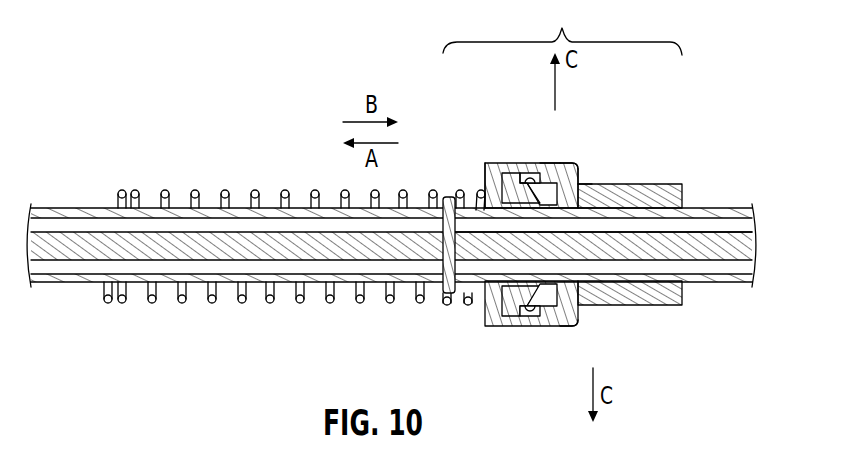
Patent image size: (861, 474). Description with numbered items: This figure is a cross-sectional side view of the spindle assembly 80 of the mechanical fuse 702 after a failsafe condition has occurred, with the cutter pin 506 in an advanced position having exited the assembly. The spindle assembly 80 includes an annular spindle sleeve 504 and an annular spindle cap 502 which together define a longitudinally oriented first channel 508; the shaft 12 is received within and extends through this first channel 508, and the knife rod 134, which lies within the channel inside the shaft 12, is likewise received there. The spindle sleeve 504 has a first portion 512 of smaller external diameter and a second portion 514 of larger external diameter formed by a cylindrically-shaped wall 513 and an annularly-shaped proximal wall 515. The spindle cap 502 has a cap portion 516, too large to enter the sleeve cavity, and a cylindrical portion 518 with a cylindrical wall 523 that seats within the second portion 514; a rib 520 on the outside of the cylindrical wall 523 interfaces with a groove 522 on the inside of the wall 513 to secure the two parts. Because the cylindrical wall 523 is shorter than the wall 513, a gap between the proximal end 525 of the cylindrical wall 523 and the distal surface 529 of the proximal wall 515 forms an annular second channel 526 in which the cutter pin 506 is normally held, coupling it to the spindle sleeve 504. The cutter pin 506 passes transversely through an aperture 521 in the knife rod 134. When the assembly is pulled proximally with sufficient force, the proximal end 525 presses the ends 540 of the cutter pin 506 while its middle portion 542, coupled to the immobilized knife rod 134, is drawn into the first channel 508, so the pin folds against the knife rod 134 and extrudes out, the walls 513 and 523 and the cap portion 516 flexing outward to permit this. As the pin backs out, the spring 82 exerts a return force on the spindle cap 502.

The shaft 12 is at (740, 207).
The spring 82 is at (165, 190).
The knife rod 134 is at (717, 253).
The cutter pin 506 is at (447, 213).
The ends 540 is at (460, 190).
The first channel 508 is at (466, 305).
The aperture 521 is at (447, 257).
The cylindrically-shaped wall 513 is at (495, 157).
The first portion 512 is at (670, 184).
The spindle cap 502 is at (490, 165).
The spindle sleeve 504 is at (548, 153).
The spindle assembly 80 is at (573, 95).
The second portion 514 is at (567, 167).
The proximal wall 515 is at (582, 184).
The groove 522 is at (533, 170).
The second channel 526 is at (560, 163).
The rib 520 is at (517, 167).
The cap portion 516 is at (492, 327).
The distal surface 529 is at (582, 305).
The proximal end 525 is at (566, 318).
The cylindrical wall 523 is at (530, 316).
The cylindrical portion 518 is at (513, 316).
The middle portion 542 is at (530, 240).
The mechanical fuse 702 is at (562, 27).